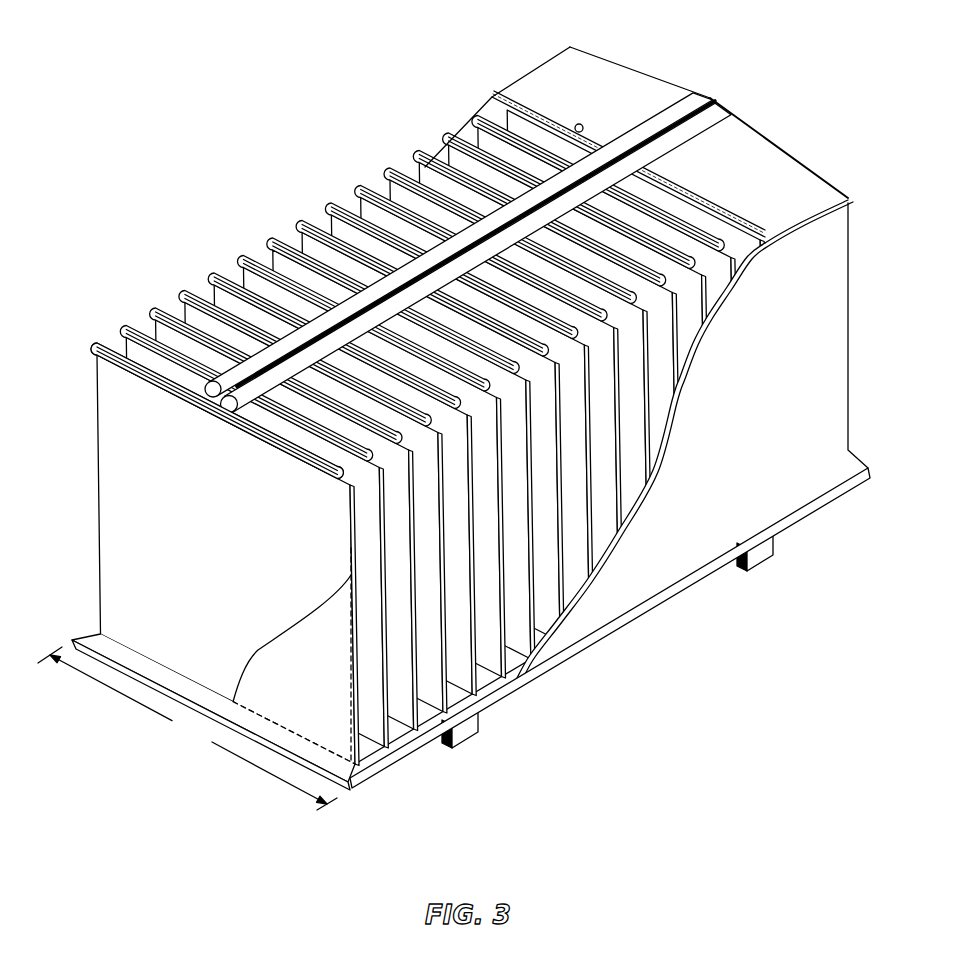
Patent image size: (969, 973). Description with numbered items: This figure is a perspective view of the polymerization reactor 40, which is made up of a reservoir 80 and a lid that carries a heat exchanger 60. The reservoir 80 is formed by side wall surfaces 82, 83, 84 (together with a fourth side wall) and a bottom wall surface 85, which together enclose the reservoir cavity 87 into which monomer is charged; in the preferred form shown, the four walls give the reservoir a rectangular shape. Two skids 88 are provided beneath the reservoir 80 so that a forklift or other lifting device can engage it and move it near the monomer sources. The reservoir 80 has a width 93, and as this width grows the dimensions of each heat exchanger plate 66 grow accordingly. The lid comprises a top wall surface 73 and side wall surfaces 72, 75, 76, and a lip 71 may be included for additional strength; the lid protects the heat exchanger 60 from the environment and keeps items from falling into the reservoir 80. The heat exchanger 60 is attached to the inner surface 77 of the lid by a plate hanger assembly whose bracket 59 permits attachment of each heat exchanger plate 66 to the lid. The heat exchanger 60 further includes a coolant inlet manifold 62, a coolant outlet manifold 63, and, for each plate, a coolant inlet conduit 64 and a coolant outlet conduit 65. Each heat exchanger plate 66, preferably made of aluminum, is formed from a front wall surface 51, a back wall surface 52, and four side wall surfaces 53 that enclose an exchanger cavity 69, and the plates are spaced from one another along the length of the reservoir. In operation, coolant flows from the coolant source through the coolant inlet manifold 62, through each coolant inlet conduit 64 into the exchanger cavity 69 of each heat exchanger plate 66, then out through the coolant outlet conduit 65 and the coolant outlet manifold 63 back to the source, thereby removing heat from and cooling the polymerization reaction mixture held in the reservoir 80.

The polymerization reactor 40 is at (470, 427).
The front wall surface 51 is at (100, 577).
The back wall surface 52 is at (358, 718).
The side wall surface 53 is at (400, 438).
The bracket 59 is at (337, 220).
The heat exchanger 60 is at (82, 355).
The coolant inlet manifold 62 is at (222, 415).
The coolant outlet manifold 63 is at (157, 322).
The coolant inlet conduit 64 is at (690, 230).
The coolant outlet conduit 65 is at (262, 267).
The heat exchanger plate 66 is at (97, 503).
The exchanger cavity 69 is at (264, 660).
The lip 71 is at (856, 208).
The side wall surface 72 is at (665, 82).
The top wall surface 73 is at (600, 75).
The side wall surface 75 is at (851, 199).
The side wall surface 76 is at (491, 96).
The inner surface 77 is at (593, 130).
The reservoir 80 is at (858, 320).
The side wall surface 82 is at (850, 254).
The side wall surface 83 is at (850, 383).
The side wall surface 84 is at (440, 147).
The bottom wall surface 85 is at (347, 775).
The reservoir cavity 87 is at (632, 503).
The skid 88 is at (478, 730).
The width 93 is at (187, 728).